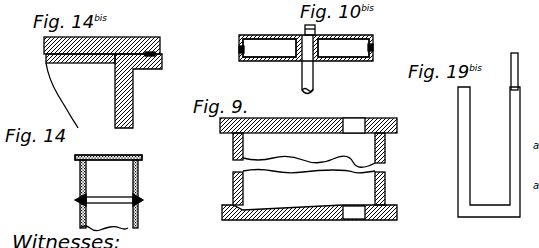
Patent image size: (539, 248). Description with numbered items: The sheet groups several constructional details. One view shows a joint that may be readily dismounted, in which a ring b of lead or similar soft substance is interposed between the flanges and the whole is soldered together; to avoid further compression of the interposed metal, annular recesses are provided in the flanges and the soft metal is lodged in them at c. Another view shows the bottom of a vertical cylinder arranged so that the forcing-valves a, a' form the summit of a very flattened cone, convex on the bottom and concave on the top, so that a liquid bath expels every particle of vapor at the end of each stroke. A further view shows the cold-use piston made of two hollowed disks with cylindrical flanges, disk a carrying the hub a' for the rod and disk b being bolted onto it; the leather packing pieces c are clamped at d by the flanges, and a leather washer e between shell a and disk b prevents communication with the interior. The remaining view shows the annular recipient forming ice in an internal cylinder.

In FIG. 14bis, the leather packing piece c is at (150, 54).
In FIG. 10bis, the leather packing piece c is at (239, 47).
In FIG. 14, the hollowed disk a is at (106, 163).
In FIG. 9, the hollowed disk a is at (308, 117).
In FIG. 14, the hub a' is at (108, 204).
In FIG. 9, the hub a' is at (309, 205).
In FIG. 14, the disk b is at (78, 155).
In FIG. 10bis, the disk b is at (290, 35).
In FIG. 10bis, the clamping point d is at (368, 47).
In FIG. 10bis, the leather washer e is at (320, 39).
In FIG. 19bis, the mould I' is at (489, 135).